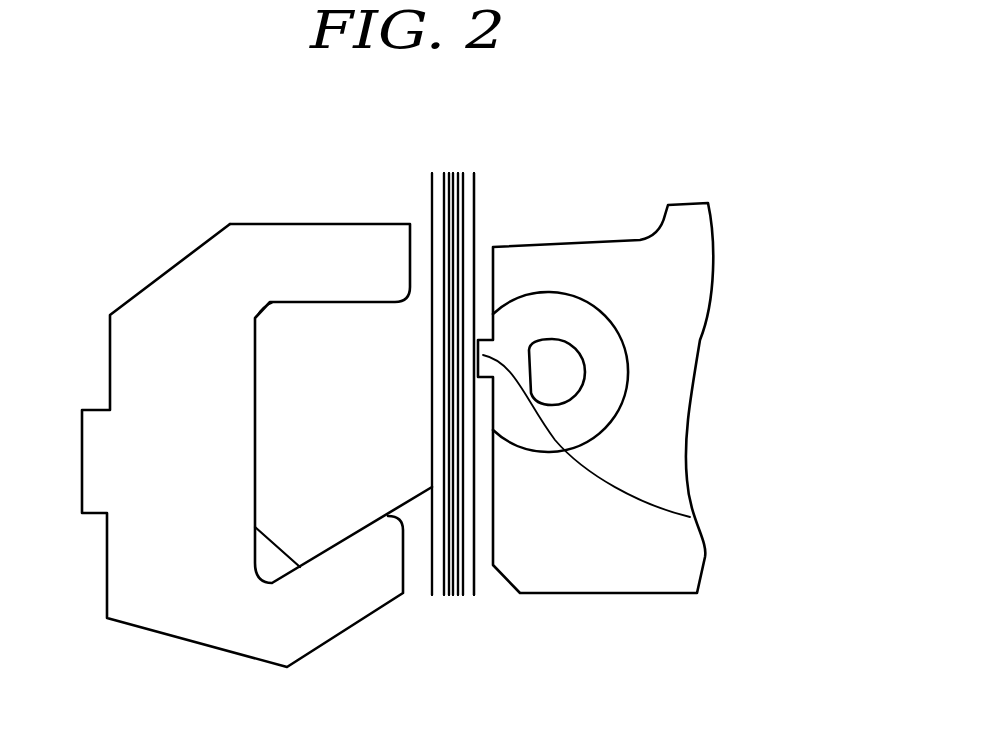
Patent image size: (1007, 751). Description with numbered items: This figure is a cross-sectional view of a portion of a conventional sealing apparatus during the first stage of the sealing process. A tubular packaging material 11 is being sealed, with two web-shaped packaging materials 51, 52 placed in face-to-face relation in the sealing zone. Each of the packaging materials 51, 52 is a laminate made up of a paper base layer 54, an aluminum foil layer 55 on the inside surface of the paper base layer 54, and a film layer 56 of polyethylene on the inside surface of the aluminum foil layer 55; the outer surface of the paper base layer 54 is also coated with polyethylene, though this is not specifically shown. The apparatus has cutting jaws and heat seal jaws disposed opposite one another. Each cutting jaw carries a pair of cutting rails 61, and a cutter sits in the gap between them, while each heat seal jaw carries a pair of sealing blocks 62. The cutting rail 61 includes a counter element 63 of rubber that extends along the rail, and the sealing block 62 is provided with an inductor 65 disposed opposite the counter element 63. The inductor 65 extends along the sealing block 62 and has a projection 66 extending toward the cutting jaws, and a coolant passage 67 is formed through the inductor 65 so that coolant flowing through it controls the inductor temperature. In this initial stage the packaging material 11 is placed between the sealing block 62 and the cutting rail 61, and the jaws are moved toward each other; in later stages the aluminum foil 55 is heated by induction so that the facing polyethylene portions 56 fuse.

The tubular packaging material 11 is at (513, 157).
The web-shaped packaging material 51 is at (450, 600).
The web-shaped packaging material 52 is at (481, 600).
The paper base layer 54 is at (470, 173).
The aluminum foil layer 55 is at (466, 173).
The film layer 56 is at (458, 173).
The cutting rail 61 is at (195, 268).
The sealing block 62 is at (591, 240).
The counter element 63 is at (360, 325).
The inductor 65 is at (620, 385).
The projection 66 is at (690, 517).
The coolant passage 67 is at (557, 360).